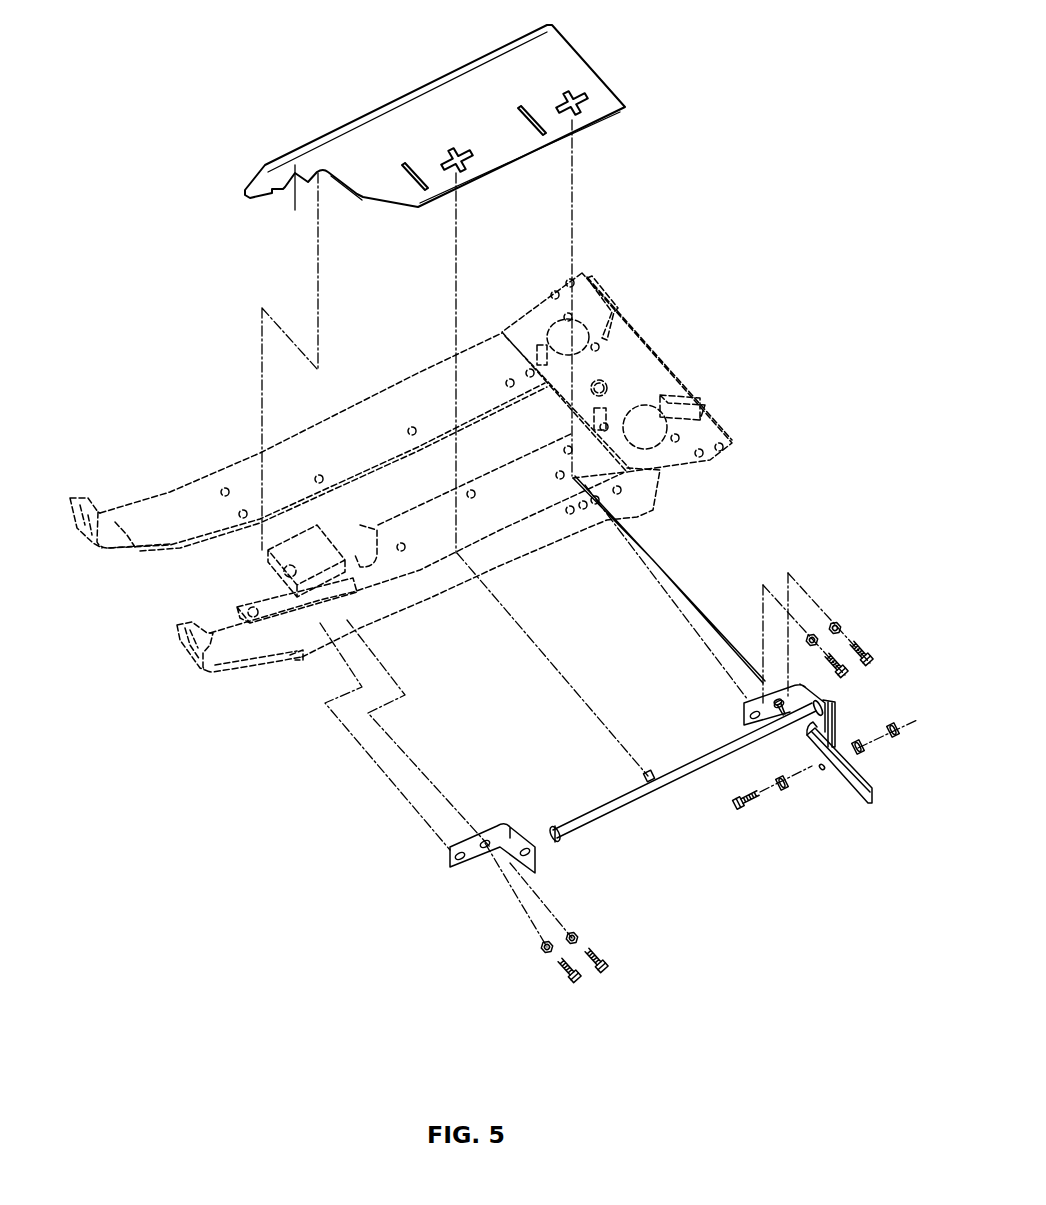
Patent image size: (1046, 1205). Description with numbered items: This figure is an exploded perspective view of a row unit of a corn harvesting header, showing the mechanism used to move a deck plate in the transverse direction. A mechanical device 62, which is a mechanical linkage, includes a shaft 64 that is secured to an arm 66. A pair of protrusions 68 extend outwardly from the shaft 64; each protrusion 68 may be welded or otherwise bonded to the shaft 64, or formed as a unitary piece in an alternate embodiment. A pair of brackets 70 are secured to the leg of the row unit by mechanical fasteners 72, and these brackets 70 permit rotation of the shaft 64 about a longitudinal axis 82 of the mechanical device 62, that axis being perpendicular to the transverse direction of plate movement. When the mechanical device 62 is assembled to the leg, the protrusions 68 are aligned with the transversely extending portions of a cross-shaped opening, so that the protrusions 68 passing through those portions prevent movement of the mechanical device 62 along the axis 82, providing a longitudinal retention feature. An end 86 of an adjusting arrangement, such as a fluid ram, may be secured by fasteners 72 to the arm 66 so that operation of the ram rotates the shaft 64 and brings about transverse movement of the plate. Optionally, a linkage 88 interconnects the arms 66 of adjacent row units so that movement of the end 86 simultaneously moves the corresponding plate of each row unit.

The mechanical device 62 is at (686, 792).
The shaft 64 is at (588, 818).
The arm 66 is at (845, 752).
The protrusion 68 is at (647, 776).
The bracket 70 is at (742, 714).
The mechanical fastener 72 is at (868, 665).
The longitudinal axis 82 is at (548, 843).
The end of adjusting arrangement 86 is at (863, 800).
The linkage 88 is at (815, 767).